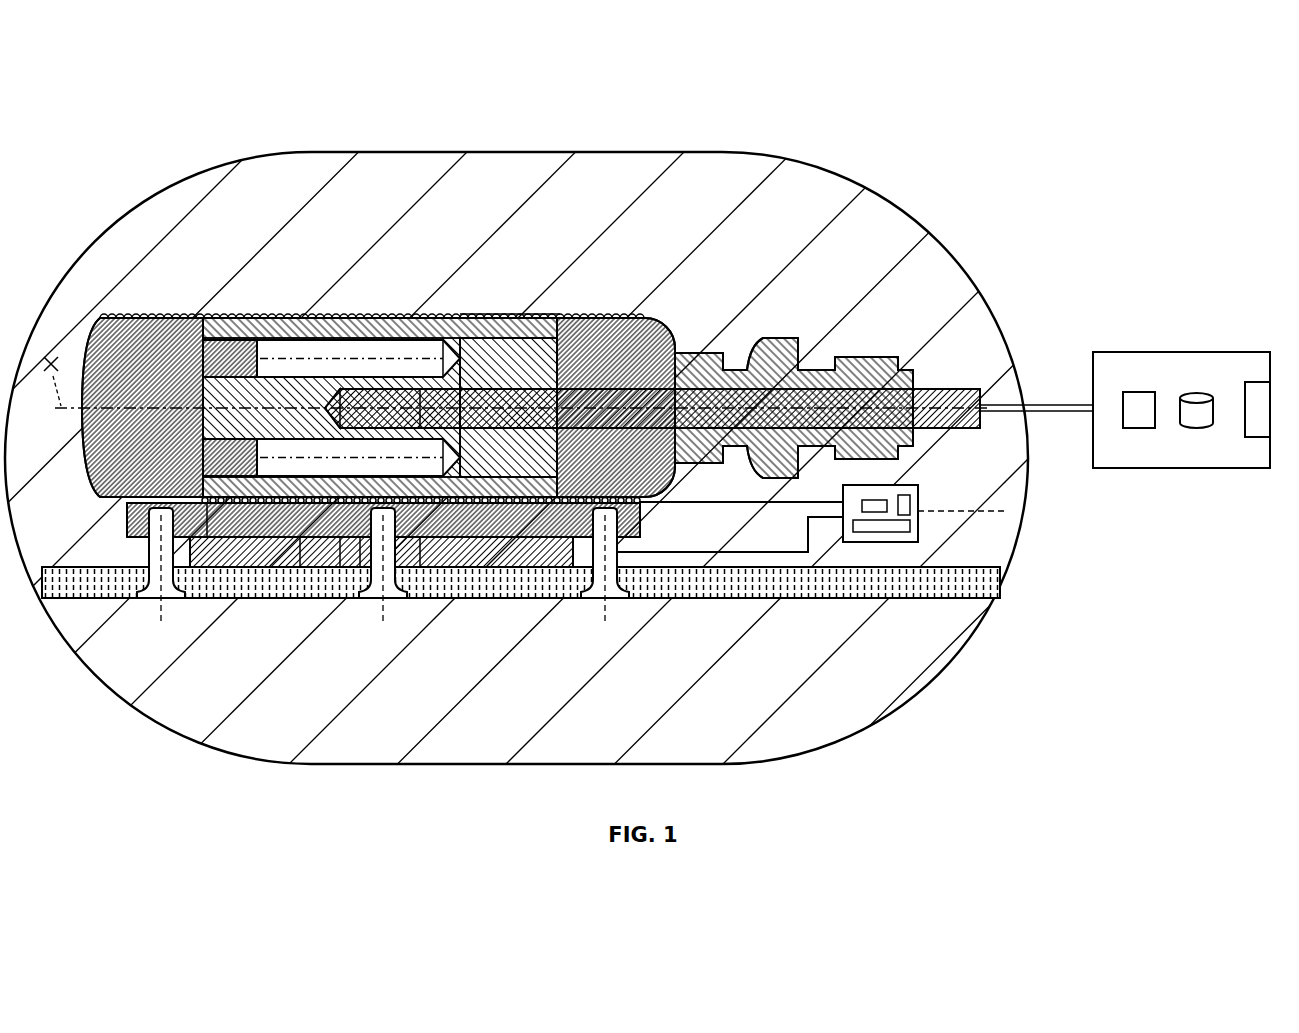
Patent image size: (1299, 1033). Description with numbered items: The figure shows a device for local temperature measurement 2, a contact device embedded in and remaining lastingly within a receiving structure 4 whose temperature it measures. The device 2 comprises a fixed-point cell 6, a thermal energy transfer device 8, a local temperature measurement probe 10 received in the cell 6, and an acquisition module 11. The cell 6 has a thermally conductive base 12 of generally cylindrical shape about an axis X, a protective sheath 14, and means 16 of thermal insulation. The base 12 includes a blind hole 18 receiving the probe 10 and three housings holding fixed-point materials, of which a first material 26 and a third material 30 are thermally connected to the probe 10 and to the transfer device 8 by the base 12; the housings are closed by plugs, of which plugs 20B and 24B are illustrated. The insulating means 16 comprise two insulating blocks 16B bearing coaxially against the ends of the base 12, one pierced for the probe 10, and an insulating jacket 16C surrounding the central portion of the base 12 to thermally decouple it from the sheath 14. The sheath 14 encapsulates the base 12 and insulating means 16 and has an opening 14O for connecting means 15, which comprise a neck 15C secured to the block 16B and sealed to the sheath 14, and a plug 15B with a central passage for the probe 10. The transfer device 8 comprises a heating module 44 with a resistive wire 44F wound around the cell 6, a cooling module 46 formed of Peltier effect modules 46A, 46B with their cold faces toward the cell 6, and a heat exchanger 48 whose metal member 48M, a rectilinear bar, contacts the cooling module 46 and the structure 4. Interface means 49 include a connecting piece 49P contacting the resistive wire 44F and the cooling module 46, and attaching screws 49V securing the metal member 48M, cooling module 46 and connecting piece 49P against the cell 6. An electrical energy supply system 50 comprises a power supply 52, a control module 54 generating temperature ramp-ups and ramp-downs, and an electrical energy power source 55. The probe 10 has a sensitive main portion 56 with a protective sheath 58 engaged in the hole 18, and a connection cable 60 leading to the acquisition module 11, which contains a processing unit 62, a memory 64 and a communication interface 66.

The device for local temperature measurement 2 is at (733, 243).
The receiving structure 4 is at (558, 206).
The fixed-point cell 6 is at (257, 288).
The thermal energy transfer device 8 is at (840, 477).
The local temperature measurement probe 10 is at (652, 355).
The acquisition module 11 is at (1181, 431).
The thermally conductive base 12 is at (515, 360).
The protective sheath 14 is at (815, 366).
The opening 14O is at (693, 332).
The connecting means 15 is at (856, 323).
The plug 15B is at (908, 352).
The neck 15C is at (733, 347).
The means of thermal insulation 16 is at (108, 432).
The insulating blocks 16B is at (108, 348).
The insulating jacket 16C is at (347, 325).
The hole 18 is at (380, 356).
The plug 20B is at (232, 352).
The plug 24B is at (232, 470).
The first material 26 is at (305, 355).
The third material 30 is at (318, 550).
The heating module 44 is at (372, 281).
The resistive wire 44F is at (517, 320).
The cooling module 46 is at (381, 609).
The Peltier effect module 46A is at (477, 555).
The Peltier effect module 46B is at (295, 545).
The heat exchanger 48 is at (521, 621).
The metal member 48M is at (937, 585).
The interface means 49 is at (383, 577).
The connecting piece 49P is at (205, 508).
The attaching screws 49V is at (390, 585).
The electrical energy supply system 50 is at (845, 548).
The power supply 52 is at (925, 509).
The control module 54 is at (913, 503).
The electrical energy power source 55 is at (897, 527).
The sensitive main portion 56 is at (400, 403).
The protective sheath 58 is at (440, 392).
The connection cable 60 is at (1050, 400).
The processing unit 62 is at (1138, 392).
The memory 64 is at (1200, 395).
The communication interface 66 is at (1257, 425).